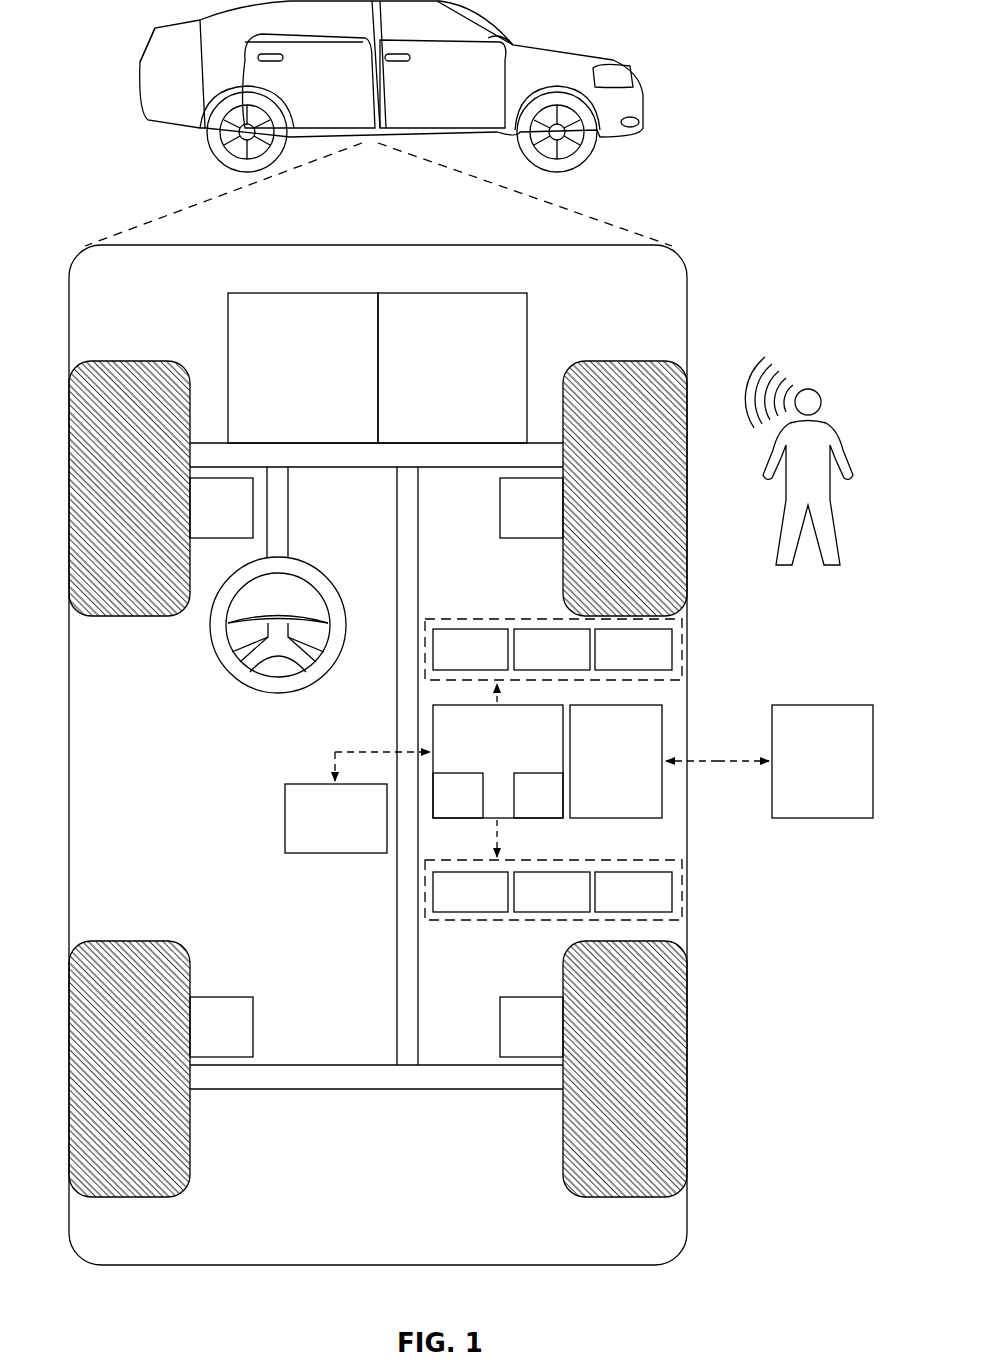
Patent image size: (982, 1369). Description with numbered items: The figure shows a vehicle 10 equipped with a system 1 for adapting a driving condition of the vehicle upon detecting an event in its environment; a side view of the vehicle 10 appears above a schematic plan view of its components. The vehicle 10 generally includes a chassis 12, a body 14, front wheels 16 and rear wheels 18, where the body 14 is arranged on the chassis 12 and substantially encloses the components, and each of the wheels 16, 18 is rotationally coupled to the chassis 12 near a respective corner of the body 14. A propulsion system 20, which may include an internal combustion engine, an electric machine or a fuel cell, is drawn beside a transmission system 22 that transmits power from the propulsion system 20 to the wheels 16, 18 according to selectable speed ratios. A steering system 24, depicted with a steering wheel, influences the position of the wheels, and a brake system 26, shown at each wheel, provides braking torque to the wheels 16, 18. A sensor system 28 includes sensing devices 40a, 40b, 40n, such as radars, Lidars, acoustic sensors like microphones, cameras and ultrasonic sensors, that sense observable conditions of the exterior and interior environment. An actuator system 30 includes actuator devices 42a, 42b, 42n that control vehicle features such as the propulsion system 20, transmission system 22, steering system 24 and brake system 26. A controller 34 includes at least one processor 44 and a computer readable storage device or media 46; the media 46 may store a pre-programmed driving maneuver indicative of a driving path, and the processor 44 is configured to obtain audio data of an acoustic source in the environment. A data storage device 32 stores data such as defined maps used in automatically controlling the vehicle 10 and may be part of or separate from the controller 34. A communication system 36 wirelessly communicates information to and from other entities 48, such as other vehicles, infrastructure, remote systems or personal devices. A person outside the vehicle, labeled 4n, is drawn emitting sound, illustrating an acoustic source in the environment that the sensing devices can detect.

The system 1 is at (724, 660).
The occupant / user 4n is at (810, 380).
The vehicle 10 is at (148, 62).
The chassis 12 is at (396, 898).
The body 14 is at (67, 715).
The front wheels 16 is at (131, 361).
The rear wheels 18 is at (128, 1198).
The propulsion system 20 is at (318, 379).
The transmission system 22 is at (467, 379).
The steering system 24 is at (300, 535).
The brake system 26 is at (236, 521).
The sensor system 28 is at (513, 618).
The actuator system 30 is at (516, 921).
The data storage device 32 is at (351, 831).
The controller 34 is at (514, 757).
The communication system 36 is at (632, 773).
The sensing device 40a is at (493, 663).
The sensing device 40b is at (574, 663).
The sensing device 40n is at (655, 663).
The actuator device 42a is at (493, 905).
The actuator device 42b is at (574, 905).
The actuator device 42n is at (655, 905).
The processor 44 is at (474, 807).
The computer readable storage device or media 46 is at (554, 807).
The other entities 48 is at (838, 773).